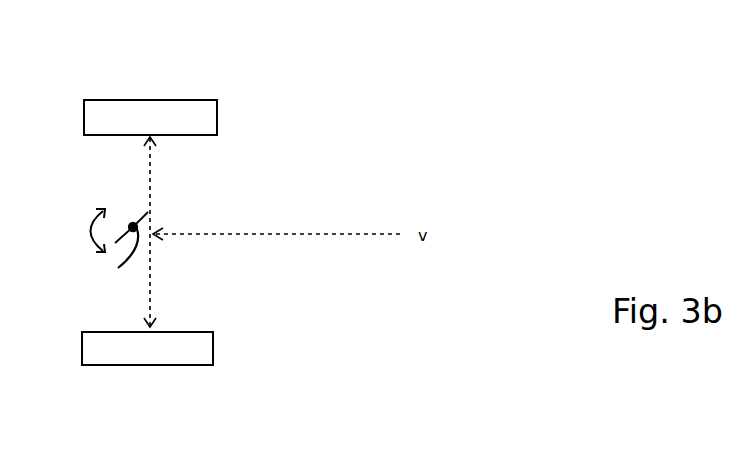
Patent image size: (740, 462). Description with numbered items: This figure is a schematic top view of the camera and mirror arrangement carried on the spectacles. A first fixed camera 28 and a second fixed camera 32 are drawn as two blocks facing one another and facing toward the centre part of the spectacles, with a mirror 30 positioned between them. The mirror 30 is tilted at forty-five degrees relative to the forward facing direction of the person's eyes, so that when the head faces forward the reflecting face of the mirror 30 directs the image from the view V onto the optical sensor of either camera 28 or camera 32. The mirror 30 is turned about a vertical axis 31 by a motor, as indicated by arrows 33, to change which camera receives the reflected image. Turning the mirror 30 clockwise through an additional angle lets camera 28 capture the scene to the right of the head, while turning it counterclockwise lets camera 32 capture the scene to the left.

The second fixed camera 32 is at (218, 99).
The first fixed camera 28 is at (193, 368).
The mirror 30 is at (127, 221).
The arrows 33 is at (78, 227).
The vertical axis 31 is at (109, 266).